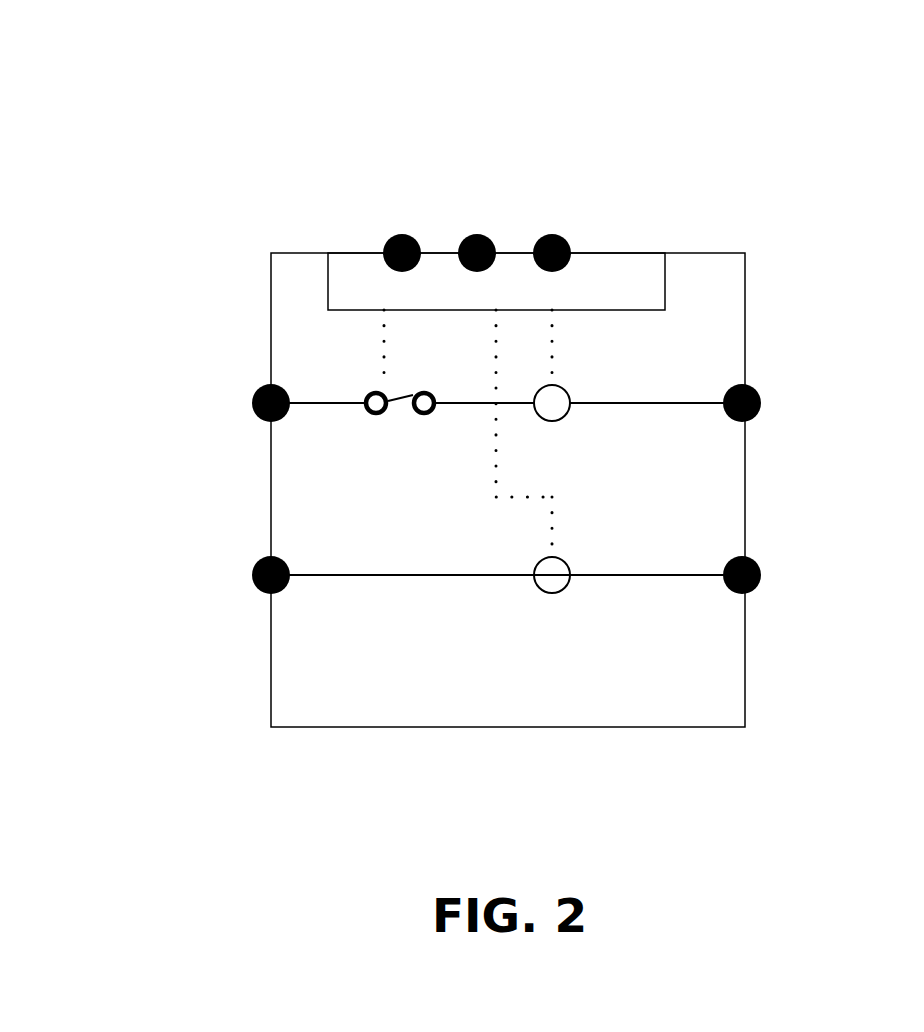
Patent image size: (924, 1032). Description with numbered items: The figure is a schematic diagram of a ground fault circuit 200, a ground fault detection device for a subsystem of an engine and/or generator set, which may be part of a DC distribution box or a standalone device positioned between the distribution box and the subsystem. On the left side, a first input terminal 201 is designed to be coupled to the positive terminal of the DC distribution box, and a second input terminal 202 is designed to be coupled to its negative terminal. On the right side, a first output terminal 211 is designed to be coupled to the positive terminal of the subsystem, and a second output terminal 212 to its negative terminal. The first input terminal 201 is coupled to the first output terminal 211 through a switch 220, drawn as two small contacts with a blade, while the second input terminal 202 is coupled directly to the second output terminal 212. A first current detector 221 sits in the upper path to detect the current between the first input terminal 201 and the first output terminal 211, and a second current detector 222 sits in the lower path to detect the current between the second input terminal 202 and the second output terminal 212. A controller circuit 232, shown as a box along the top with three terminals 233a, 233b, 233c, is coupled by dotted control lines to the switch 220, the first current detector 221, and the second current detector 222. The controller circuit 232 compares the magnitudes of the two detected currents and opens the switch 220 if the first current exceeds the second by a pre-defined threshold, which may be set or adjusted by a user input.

The ground fault circuit 200 is at (775, 66).
The first input terminal 201 is at (257, 395).
The second input terminal 202 is at (258, 558).
The first output terminal 211 is at (758, 401).
The second output terminal 212 is at (758, 575).
The switch 220 is at (364, 403).
The first current detector 221 is at (556, 421).
The second current detector 222 is at (563, 589).
The controller circuit 232 is at (666, 291).
The first control terminal 233a is at (422, 248).
The second control terminal 233b is at (492, 248).
The third control terminal 233c is at (572, 248).